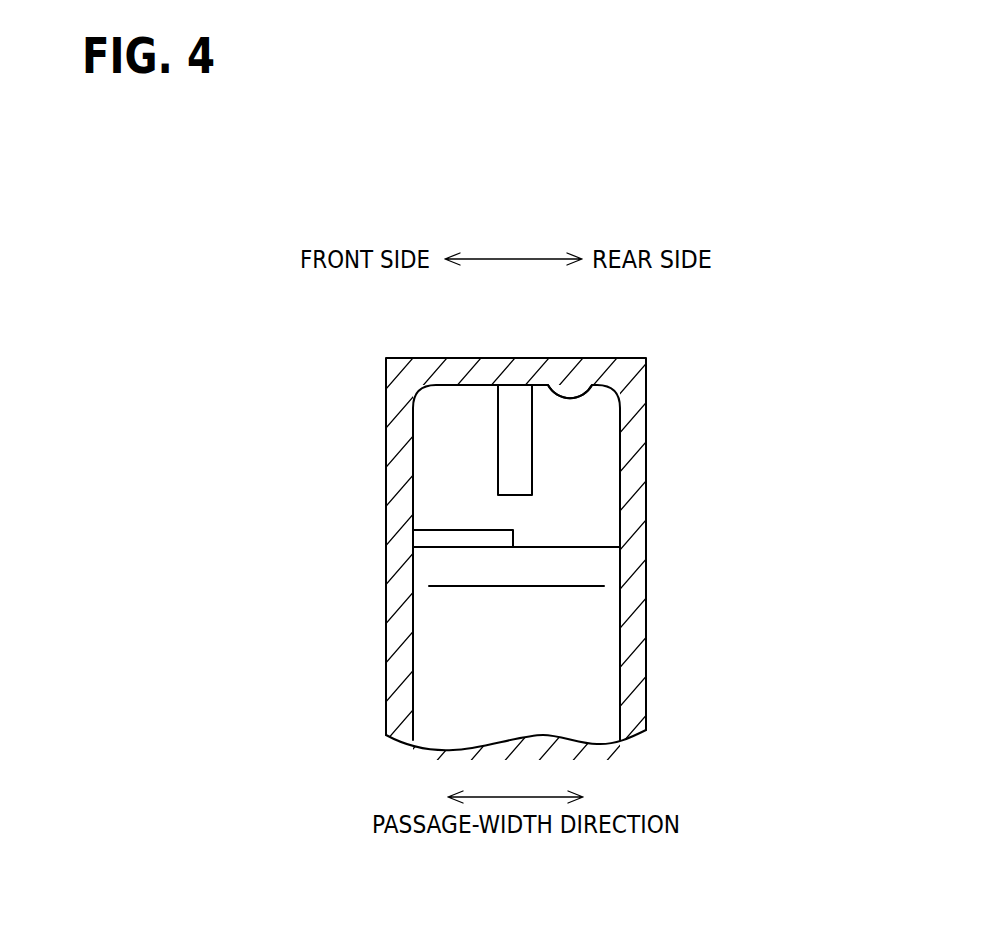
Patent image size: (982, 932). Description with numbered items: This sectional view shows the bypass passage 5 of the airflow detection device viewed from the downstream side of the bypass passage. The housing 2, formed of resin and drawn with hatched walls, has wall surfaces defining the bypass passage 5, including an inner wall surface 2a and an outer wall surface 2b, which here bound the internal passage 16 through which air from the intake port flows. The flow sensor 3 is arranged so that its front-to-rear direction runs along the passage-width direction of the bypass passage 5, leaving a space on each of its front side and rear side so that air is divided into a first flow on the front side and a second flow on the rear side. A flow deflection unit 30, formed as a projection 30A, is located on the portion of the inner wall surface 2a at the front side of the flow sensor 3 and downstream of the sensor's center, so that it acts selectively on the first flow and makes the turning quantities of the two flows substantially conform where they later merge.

The housing 2 is at (635, 477).
The inner wall surface 2a is at (583, 546).
The outer wall surface 2b is at (590, 383).
The flow sensor 3 is at (520, 468).
The internal passage 16 is at (587, 420).
The bypass passage 5 is at (593, 550).
The projection 30A is at (438, 535).
The flow deflection unit 30 is at (372, 522).